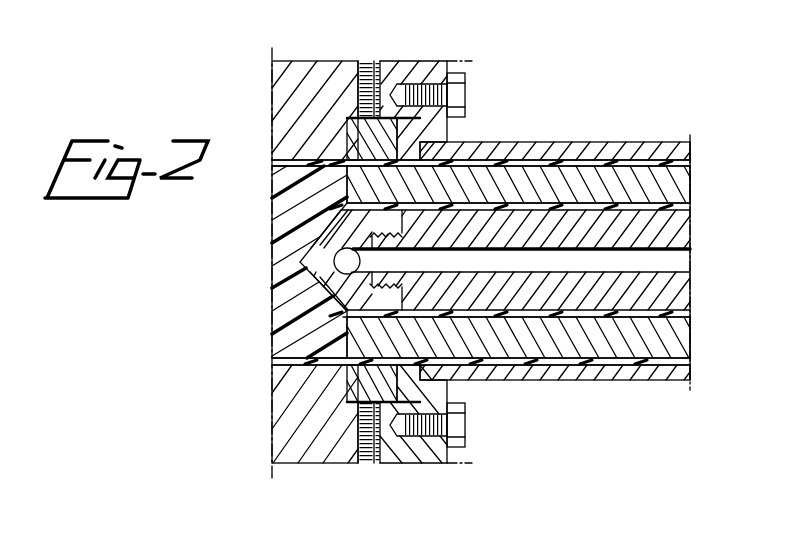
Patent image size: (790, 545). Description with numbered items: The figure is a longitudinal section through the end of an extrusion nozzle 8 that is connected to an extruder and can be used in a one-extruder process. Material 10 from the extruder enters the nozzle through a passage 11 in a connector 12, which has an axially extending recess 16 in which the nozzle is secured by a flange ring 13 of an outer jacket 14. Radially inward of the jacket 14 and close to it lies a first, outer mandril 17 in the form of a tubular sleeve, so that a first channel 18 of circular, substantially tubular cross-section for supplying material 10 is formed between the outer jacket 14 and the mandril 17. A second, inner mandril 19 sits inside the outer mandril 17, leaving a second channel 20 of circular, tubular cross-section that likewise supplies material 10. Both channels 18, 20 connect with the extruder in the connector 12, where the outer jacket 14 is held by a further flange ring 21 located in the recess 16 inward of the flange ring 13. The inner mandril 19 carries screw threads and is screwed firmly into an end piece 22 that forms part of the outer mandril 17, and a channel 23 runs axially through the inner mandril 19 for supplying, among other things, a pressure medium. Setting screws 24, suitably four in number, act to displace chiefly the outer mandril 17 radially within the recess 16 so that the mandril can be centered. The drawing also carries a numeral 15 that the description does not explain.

The extrusion nozzle 8 is at (551, 143).
The material 10 is at (278, 301).
The passage 11 is at (287, 163).
The connector 12 is at (297, 398).
The flange ring 13 is at (420, 137).
The outer jacket 14 is at (528, 375).
The lower set screw 15 is at (452, 397).
The recess 16 is at (345, 123).
The outer mandril 17 is at (624, 345).
The first channel 18 is at (620, 162).
The inner mandril 19 is at (490, 220).
The second channel 20 is at (690, 208).
The flange ring 21 is at (358, 100).
The end piece 22 is at (313, 242).
The channel 23 is at (683, 266).
The setting screws 24 is at (378, 62).